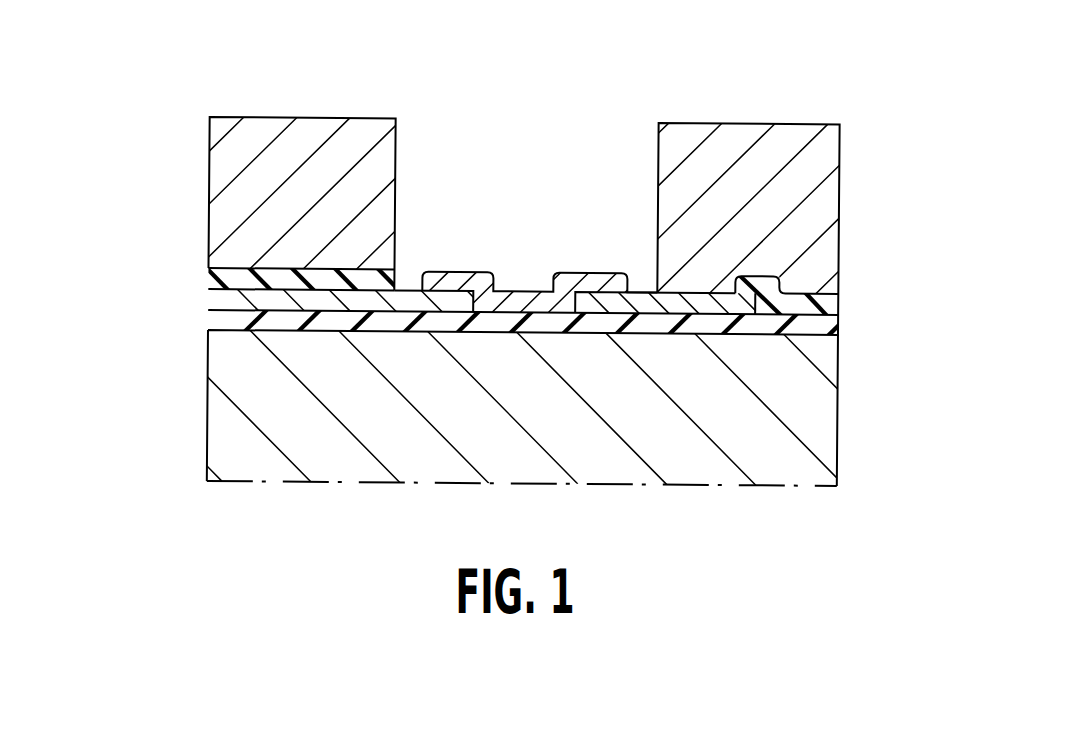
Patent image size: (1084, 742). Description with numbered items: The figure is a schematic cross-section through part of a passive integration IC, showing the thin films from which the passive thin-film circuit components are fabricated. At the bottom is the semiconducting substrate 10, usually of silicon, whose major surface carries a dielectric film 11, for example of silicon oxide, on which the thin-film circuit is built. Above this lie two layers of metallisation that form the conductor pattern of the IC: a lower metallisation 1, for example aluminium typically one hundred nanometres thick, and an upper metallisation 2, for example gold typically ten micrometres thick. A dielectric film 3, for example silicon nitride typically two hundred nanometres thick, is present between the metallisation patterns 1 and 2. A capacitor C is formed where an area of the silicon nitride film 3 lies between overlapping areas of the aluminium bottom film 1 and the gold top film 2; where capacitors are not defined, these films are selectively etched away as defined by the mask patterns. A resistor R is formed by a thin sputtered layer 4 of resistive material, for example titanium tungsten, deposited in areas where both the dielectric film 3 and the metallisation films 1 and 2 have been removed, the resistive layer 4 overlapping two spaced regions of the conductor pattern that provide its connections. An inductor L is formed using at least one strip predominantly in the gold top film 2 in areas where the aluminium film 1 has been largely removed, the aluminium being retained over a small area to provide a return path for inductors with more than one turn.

The lower metallisation 1 is at (232, 297).
The upper metallisation 2 is at (228, 173).
The dielectric film 3 is at (239, 275).
The resistive layer 4 is at (525, 300).
The semiconducting substrate 10 is at (817, 427).
The dielectric film 11 is at (242, 325).
The capacitor C is at (326, 103).
The resistor R is at (528, 142).
The inductor L is at (746, 107).